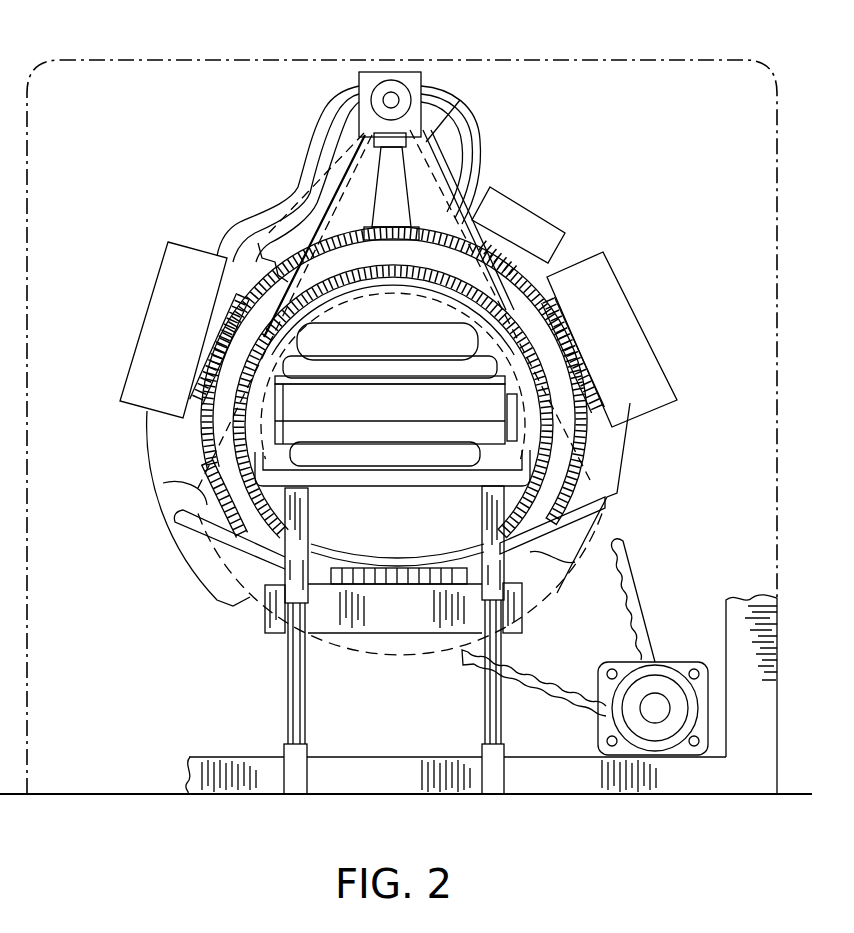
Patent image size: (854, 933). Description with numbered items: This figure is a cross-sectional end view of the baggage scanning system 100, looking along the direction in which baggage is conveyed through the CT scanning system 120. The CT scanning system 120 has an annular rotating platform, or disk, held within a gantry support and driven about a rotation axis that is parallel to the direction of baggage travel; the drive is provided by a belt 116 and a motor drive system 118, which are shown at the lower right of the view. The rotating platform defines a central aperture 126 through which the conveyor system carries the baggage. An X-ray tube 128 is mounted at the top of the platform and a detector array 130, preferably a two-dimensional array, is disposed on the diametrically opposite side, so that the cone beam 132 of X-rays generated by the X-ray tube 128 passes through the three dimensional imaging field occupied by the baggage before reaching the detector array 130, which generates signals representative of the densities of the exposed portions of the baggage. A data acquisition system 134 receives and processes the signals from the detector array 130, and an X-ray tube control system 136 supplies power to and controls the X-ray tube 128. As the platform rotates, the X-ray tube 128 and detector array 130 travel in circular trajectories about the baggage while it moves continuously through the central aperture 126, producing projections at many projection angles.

The baggage scanning system 100 is at (166, 850).
The belt 116 is at (630, 568).
The motor drive system 118 is at (658, 702).
The CT scanning system 120 is at (112, 58).
The central aperture 126 is at (420, 534).
The X-ray tube 128 is at (374, 96).
The detector array 130 is at (190, 508).
The cone beam 132 is at (590, 480).
The data acquisition system 134 is at (268, 608).
The X-ray tube control system 136 is at (163, 293).